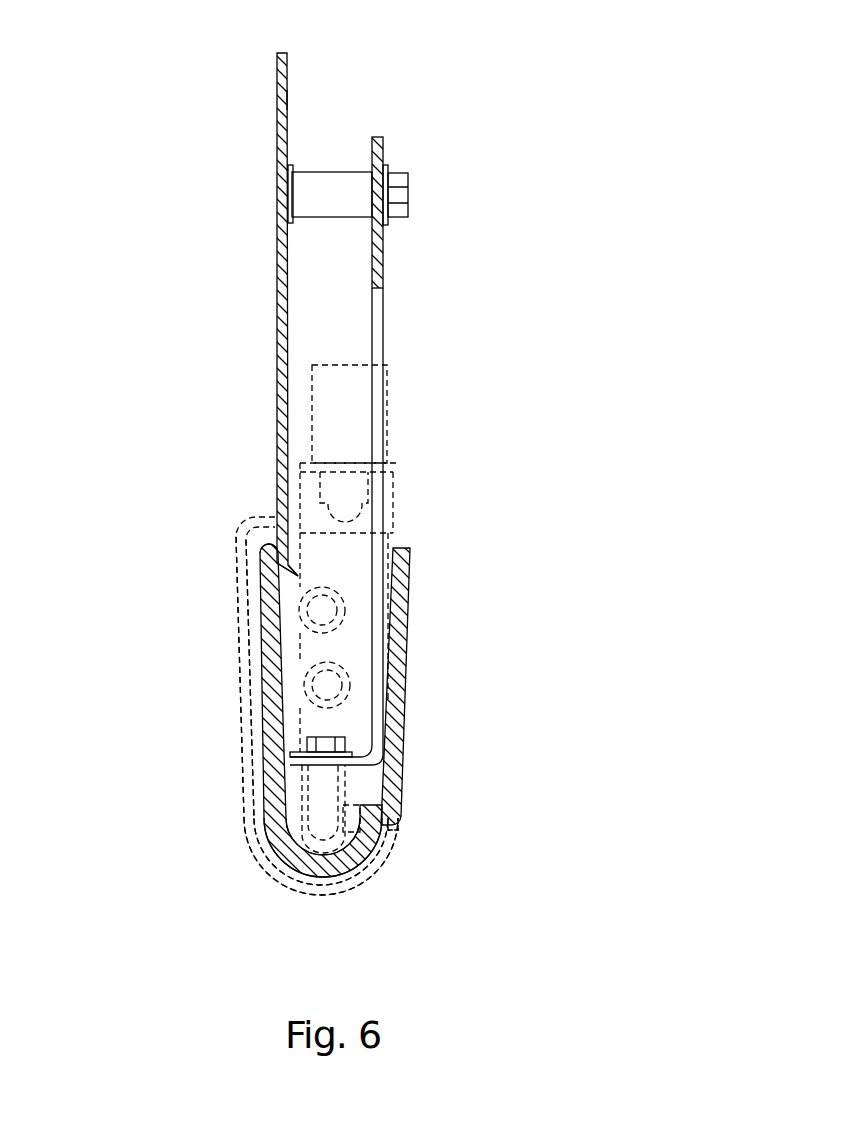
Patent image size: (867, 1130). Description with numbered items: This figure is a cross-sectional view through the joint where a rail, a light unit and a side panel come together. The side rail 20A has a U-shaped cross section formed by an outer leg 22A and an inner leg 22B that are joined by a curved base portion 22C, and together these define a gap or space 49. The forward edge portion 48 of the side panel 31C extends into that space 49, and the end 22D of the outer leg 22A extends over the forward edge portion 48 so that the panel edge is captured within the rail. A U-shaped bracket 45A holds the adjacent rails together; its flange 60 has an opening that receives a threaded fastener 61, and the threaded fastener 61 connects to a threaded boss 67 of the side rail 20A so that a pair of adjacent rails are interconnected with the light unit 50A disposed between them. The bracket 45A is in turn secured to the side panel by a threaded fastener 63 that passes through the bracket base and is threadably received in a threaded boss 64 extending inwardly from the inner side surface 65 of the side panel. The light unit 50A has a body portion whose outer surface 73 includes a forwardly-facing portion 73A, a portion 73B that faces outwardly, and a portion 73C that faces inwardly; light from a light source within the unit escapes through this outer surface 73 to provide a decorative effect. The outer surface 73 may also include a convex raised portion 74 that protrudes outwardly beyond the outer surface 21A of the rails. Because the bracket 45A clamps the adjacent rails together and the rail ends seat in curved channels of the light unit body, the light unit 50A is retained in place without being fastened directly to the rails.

The inner side surface 65 is at (287, 100).
The threaded boss 64 is at (333, 172).
The threaded fastener 63 is at (397, 177).
The side panel 31C is at (278, 250).
The U-shaped bracket 45A is at (383, 352).
The forward edge portion 48 is at (294, 574).
The gap or space 49 is at (347, 563).
The end of outer leg 22D is at (240, 541).
The inner leg 22B is at (410, 588).
The outer leg 22A is at (260, 617).
The threaded fastener 61 is at (340, 740).
The light unit 50A is at (242, 710).
The side rail 20A is at (402, 767).
The outwardly-facing portion of outer surface 73B is at (240, 762).
The inwardly-facing portion of outer surface 73C is at (400, 842).
The flange 60 is at (318, 790).
The convex raised portion 74 is at (378, 897).
The threaded boss 67 is at (303, 800).
The outer surface 73 is at (350, 897).
The outer surface of rail 21A is at (320, 878).
The forwardly-facing portion of outer surface 73A is at (332, 903).
The curved base portion 22C is at (290, 862).